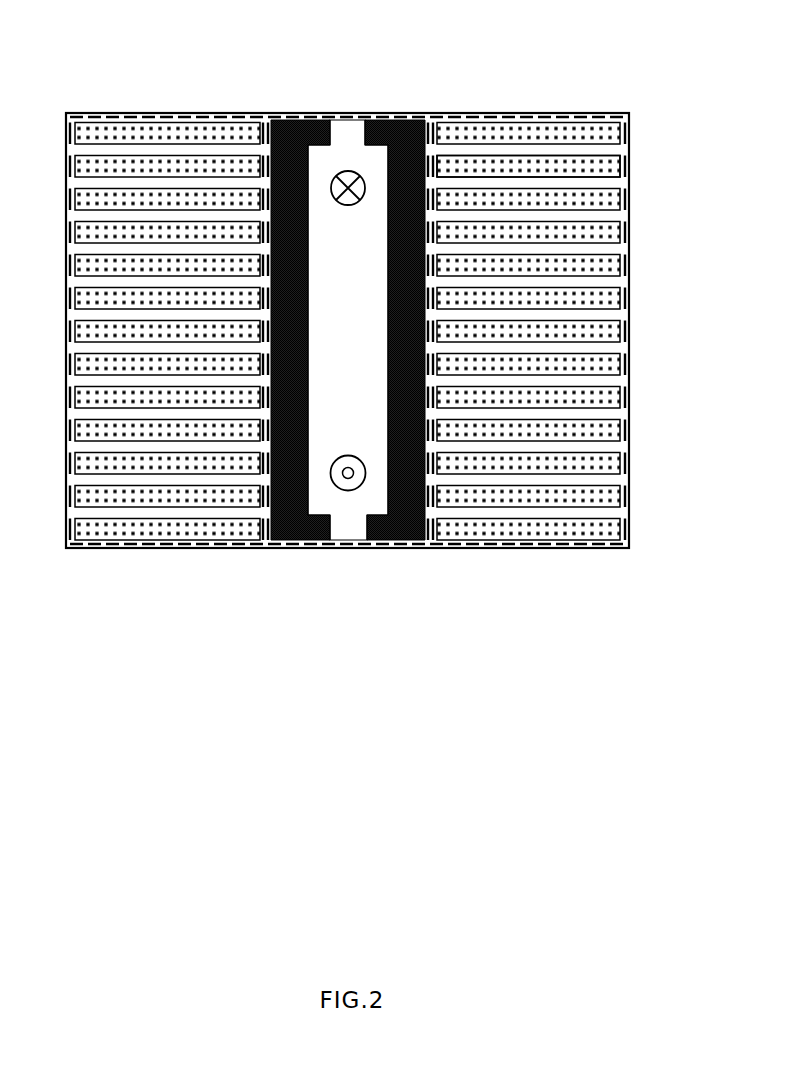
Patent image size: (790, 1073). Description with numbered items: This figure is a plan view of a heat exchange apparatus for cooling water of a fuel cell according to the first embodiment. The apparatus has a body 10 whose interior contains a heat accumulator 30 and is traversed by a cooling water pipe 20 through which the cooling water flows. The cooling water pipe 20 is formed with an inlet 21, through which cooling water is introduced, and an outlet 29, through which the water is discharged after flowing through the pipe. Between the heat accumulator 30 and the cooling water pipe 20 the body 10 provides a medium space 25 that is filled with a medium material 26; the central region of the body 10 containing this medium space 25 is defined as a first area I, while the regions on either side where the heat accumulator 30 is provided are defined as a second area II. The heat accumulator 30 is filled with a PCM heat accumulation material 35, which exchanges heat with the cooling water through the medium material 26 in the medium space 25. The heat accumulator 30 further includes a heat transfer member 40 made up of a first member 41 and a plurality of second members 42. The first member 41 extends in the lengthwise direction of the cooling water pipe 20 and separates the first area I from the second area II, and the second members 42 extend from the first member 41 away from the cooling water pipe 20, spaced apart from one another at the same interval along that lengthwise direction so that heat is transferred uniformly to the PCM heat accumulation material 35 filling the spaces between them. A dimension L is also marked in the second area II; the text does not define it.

The body 10 is at (614, 106).
The cooling water pipe 20 is at (317, 158).
The inlet 21 is at (348, 178).
The medium space 25 is at (408, 465).
The medium material 26 is at (290, 518).
The outlet 29 is at (348, 478).
The heat accumulator 30 is at (415, 160).
The PCM heat accumulation material 35 is at (607, 264).
The heat transfer member 40 is at (553, 75).
The first member 41 is at (432, 136).
The second members 42 is at (552, 152).
The width L is at (425, 330).
The first area I is at (290, 117).
The second area II is at (165, 117).